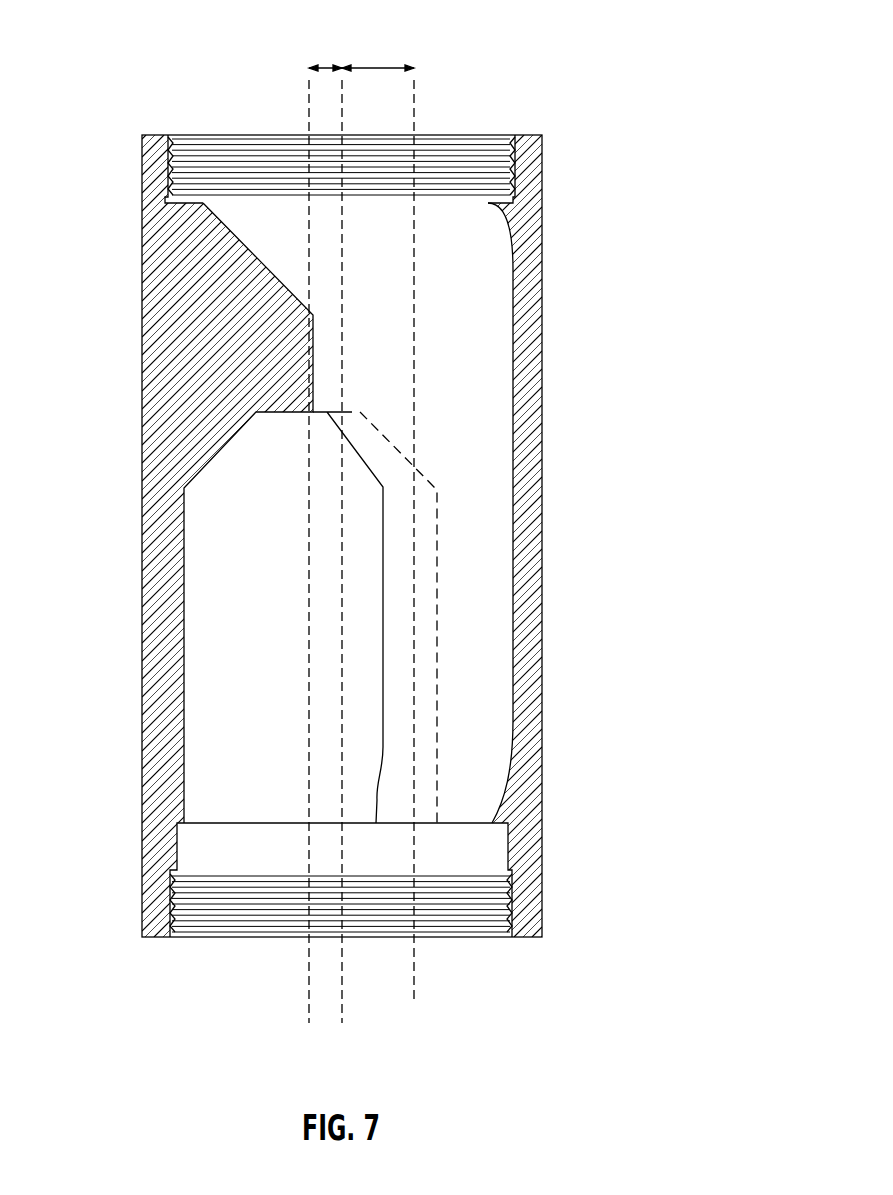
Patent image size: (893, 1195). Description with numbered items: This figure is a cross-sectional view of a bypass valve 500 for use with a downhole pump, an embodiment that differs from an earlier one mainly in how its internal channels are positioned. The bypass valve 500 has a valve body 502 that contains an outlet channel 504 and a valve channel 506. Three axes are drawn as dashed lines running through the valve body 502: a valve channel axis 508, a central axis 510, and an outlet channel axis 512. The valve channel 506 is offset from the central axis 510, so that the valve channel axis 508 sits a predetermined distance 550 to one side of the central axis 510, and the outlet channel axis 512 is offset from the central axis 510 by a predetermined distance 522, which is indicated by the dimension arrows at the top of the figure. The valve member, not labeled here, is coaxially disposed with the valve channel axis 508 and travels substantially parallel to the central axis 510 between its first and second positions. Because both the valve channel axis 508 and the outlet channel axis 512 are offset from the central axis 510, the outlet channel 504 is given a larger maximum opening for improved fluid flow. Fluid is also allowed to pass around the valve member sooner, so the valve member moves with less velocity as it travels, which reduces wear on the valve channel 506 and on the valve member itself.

The bypass valve 500 is at (650, 146).
The valve body 502 is at (543, 255).
The outlet channel 504 is at (509, 421).
The valve channel 506 is at (185, 710).
The valve channel axis 508 is at (309, 1022).
The central axis 510 is at (342, 1022).
The outlet channel axis 512 is at (414, 1002).
The predetermined distance 522 is at (381, 64).
The offset distance 550 is at (321, 64).